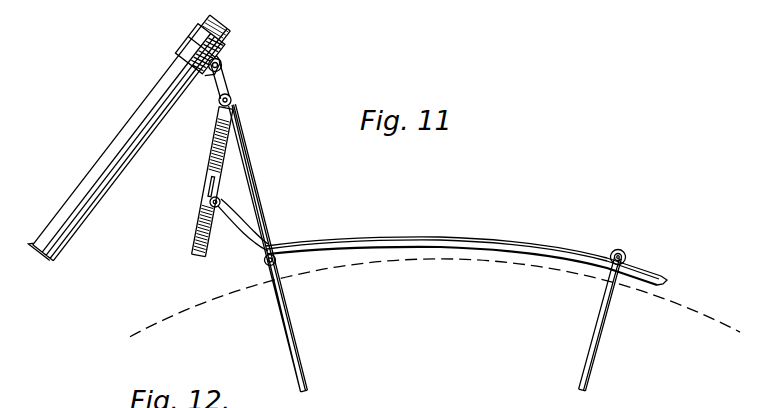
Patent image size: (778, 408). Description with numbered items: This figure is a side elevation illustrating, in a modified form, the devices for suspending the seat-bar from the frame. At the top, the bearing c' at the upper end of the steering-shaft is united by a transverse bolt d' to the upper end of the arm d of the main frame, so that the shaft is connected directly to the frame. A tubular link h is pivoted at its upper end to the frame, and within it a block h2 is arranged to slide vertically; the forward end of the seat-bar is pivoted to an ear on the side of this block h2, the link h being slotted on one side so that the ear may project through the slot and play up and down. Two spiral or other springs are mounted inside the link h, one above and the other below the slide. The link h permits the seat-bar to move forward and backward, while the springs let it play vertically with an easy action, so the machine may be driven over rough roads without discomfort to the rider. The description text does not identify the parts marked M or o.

The mast or rod M is at (129, 138).
The bearing c' is at (198, 52).
The transverse bolt d' is at (232, 80).
The tubular link h is at (212, 143).
The block h2 is at (206, 188).
The arm d is at (268, 248).
The band o is at (440, 241).